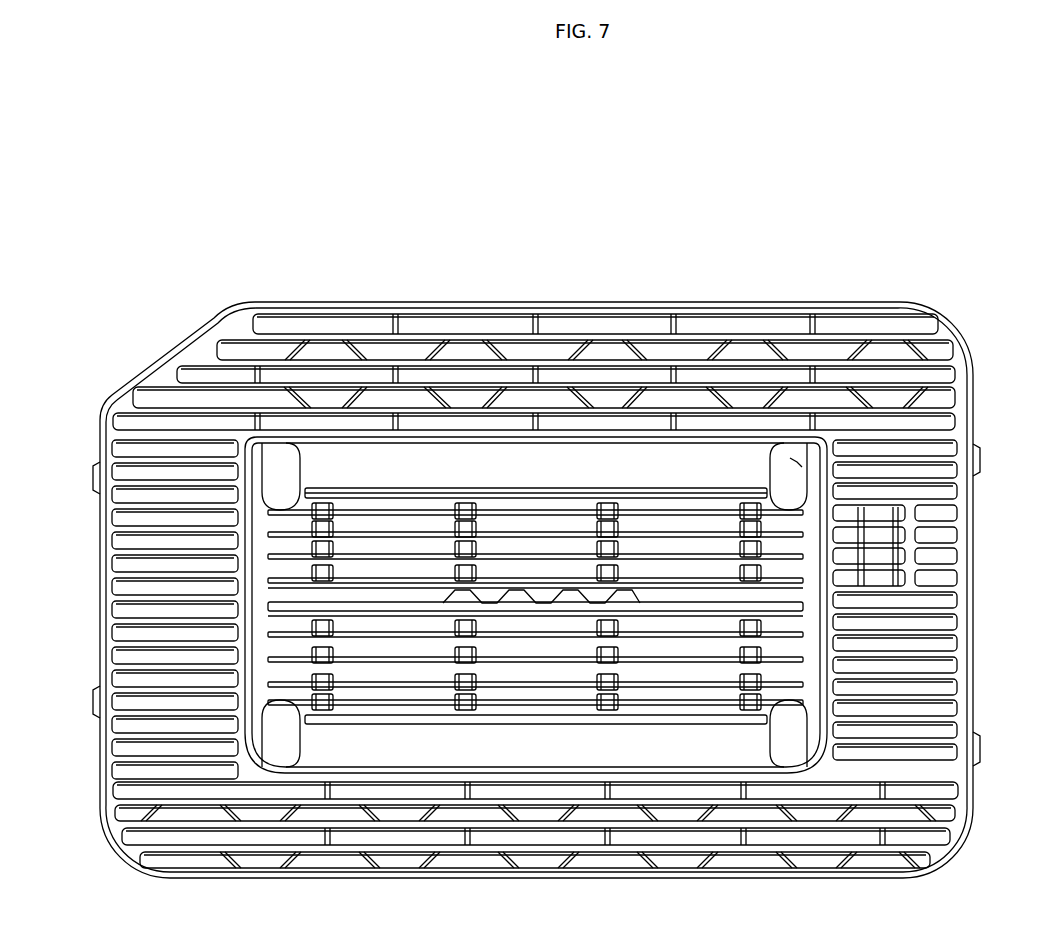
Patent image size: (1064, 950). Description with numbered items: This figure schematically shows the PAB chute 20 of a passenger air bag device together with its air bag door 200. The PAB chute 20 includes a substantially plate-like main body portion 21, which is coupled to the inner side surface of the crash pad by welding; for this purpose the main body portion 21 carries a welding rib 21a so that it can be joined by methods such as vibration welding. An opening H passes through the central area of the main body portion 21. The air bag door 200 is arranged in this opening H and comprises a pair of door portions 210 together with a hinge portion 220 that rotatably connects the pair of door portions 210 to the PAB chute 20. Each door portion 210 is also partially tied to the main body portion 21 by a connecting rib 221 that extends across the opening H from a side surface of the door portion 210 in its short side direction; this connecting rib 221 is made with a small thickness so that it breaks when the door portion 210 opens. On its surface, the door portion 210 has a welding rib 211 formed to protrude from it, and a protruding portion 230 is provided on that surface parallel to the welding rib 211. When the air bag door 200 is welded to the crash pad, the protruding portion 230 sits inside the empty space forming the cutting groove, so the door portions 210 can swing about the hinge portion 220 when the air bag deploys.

The PAB chute 20 is at (490, 301).
The main body portion 21 is at (364, 326).
The welding rib 21a is at (235, 362).
The hinge portion 220 is at (718, 462).
The opening H is at (800, 455).
The air bag door 200 is at (273, 496).
The door portion 210 is at (272, 522).
The connecting rib 221 is at (257, 575).
The protruding portion 230 is at (303, 598).
The welding rib 211 is at (278, 745).